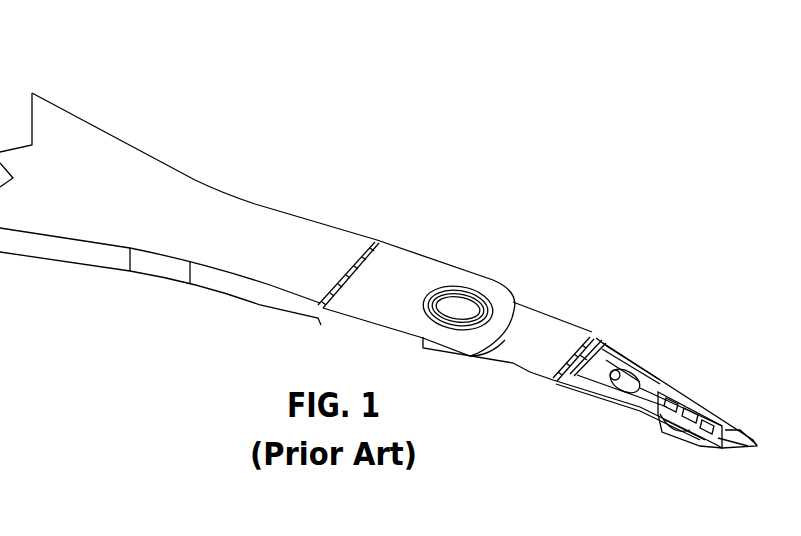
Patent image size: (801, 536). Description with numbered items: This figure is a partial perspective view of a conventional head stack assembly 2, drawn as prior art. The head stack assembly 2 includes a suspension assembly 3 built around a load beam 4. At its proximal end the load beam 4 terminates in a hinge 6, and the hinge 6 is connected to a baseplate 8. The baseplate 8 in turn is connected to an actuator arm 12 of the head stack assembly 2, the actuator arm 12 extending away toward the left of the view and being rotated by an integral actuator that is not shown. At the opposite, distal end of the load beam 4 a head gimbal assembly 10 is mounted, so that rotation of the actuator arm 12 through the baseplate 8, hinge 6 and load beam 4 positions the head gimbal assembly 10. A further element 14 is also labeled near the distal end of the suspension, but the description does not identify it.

The head stack assembly 2 is at (352, 162).
The suspension assembly 3 is at (672, 298).
The load beam 4 is at (667, 373).
The hinge 6 is at (580, 367).
The baseplate 8 is at (547, 320).
The head gimbal assembly 10 is at (672, 460).
The actuator arm 12 is at (405, 270).
The flexure tail / trace 14 is at (710, 443).